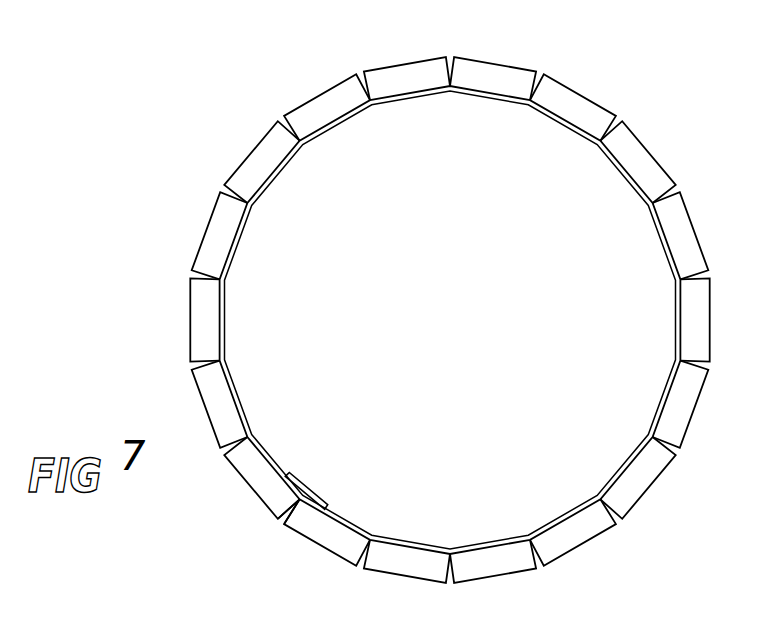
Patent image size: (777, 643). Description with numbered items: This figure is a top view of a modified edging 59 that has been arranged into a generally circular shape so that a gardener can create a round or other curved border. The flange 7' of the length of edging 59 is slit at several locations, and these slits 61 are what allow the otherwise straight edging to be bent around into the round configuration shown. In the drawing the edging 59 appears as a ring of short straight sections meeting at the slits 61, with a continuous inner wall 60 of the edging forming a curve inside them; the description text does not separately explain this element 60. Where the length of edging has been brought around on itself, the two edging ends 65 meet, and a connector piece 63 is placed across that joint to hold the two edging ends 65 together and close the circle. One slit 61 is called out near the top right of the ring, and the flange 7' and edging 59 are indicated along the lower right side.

The modified edging 59 is at (598, 562).
The inner ring 60 is at (252, 405).
The slits 61 is at (678, 192).
The connector piece 63 is at (323, 499).
The edging ends 65 is at (300, 500).
The flange 7' is at (655, 482).